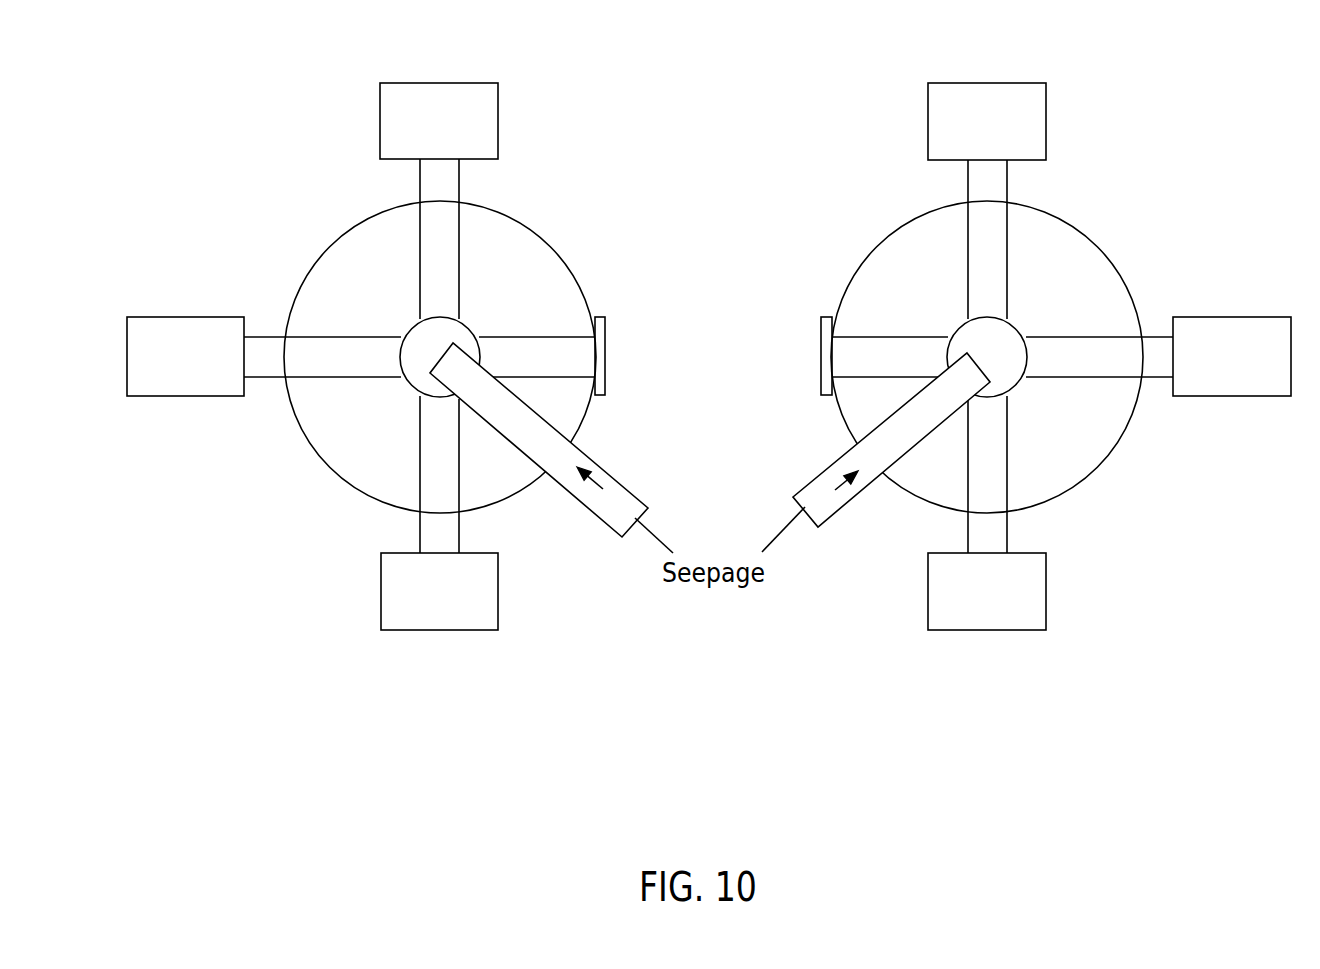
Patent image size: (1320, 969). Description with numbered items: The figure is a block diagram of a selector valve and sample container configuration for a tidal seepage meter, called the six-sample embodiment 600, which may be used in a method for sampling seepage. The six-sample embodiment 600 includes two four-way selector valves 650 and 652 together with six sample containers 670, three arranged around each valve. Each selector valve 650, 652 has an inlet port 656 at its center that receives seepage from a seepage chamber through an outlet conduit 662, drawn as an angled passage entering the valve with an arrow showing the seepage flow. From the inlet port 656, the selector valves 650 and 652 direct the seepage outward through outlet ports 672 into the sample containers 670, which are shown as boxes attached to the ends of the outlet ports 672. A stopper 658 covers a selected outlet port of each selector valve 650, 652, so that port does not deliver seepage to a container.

The six-sample embodiment 600 is at (728, 758).
The selector valve 650 is at (510, 258).
The selector valve 652 is at (927, 258).
The inlet port 656 is at (433, 337).
The stopper 658 is at (603, 372).
The outlet conduit 662 is at (582, 463).
The sample container 670 is at (478, 107).
The outlet port 672 is at (447, 185).